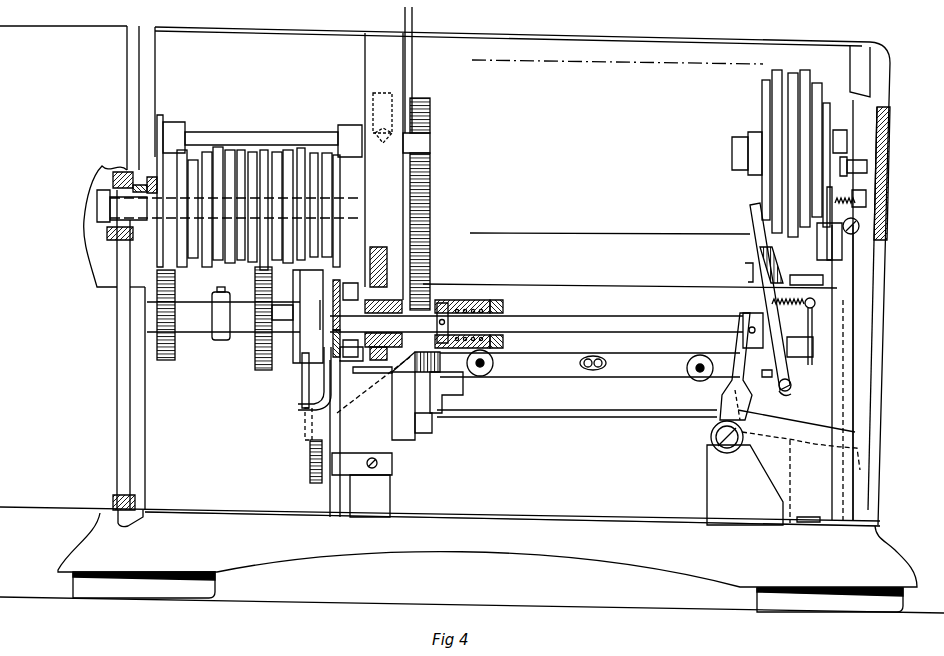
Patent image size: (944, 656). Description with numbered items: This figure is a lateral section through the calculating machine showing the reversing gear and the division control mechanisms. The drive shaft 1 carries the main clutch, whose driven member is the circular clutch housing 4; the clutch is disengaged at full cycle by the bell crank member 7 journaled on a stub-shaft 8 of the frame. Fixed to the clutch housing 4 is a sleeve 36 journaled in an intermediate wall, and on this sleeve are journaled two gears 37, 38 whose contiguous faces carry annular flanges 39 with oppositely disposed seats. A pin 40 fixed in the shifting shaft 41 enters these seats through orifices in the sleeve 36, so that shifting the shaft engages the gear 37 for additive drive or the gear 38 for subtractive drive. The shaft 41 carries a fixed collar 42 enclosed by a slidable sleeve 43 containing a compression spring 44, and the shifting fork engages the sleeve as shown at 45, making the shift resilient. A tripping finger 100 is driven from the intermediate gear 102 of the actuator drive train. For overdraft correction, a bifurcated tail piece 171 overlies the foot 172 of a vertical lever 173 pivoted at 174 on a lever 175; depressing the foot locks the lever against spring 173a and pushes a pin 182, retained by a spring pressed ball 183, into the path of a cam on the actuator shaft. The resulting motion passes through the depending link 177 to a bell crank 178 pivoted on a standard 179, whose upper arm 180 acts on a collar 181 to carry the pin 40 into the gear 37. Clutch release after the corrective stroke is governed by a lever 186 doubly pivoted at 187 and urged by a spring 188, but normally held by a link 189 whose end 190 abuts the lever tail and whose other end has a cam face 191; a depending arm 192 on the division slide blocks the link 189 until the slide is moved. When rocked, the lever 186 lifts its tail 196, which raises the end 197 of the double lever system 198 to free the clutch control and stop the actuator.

The tripping finger 100 is at (105, 168).
The gear 37 is at (382, 262).
The intermediate gear 102 is at (422, 243).
The shifting shaft 41 is at (572, 318).
The fixed collar 42 is at (462, 304).
The compression spring 44 is at (487, 310).
The slidable sleeve 43 is at (505, 306).
The shifting fork engagement 45 is at (442, 303).
The double lever system 198 is at (620, 375).
The sleeve 36 is at (400, 396).
The drive shaft 1 is at (242, 332).
The gear 38 is at (308, 316).
The pin 40 is at (330, 318).
The clutch housing 4 is at (290, 362).
The bell crank member 7 is at (298, 405).
The stub-shaft 8 is at (298, 425).
The annular flange 39 is at (353, 352).
The depending arm 192 is at (138, 488).
The cam face 191 is at (143, 500).
The link 189 is at (562, 515).
The lever 175 is at (818, 222).
The spring pressed ball 183 is at (848, 152).
The pin 182 is at (868, 165).
The spring 173a is at (852, 200).
The vertical lever 173 is at (863, 207).
The pivot 174 is at (860, 226).
The lever 186 is at (762, 243).
The foot 172 is at (803, 284).
The bifurcated tail piece 171 is at (746, 274).
The collar 181 is at (745, 316).
The spring 188 is at (815, 303).
The depending link 177 is at (837, 370).
The upper arm of bell crank 180 is at (740, 345).
The pivot 187 is at (797, 357).
The tail 196 is at (791, 388).
The end of link 190 is at (788, 398).
The end of double lever system 197 is at (769, 378).
The bell crank 178 is at (803, 445).
The standard 179 is at (749, 489).